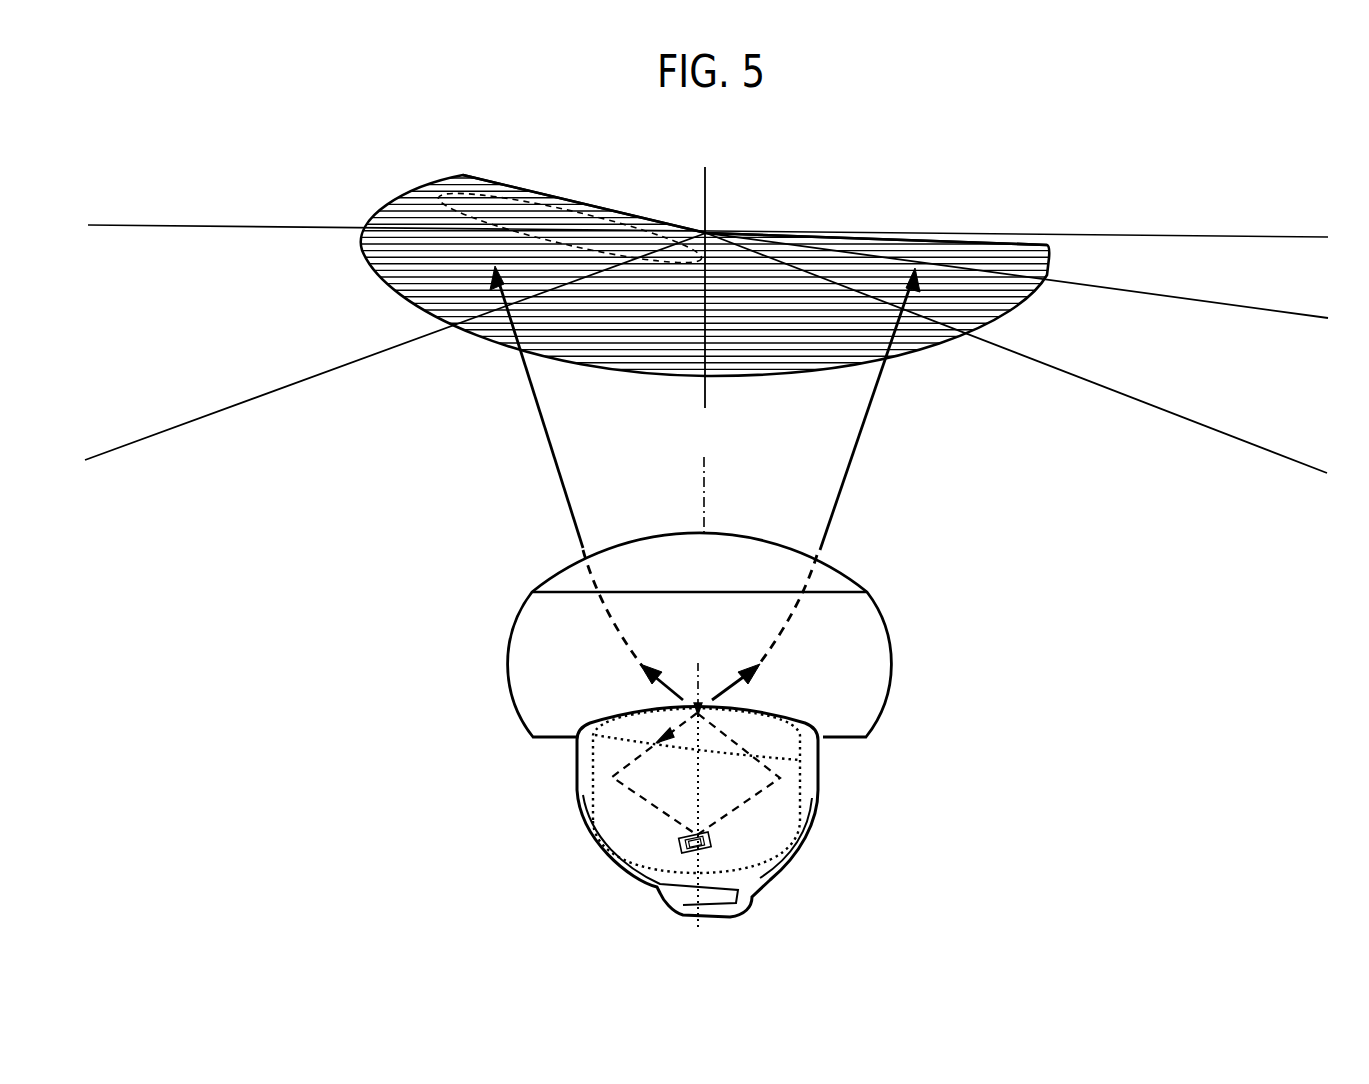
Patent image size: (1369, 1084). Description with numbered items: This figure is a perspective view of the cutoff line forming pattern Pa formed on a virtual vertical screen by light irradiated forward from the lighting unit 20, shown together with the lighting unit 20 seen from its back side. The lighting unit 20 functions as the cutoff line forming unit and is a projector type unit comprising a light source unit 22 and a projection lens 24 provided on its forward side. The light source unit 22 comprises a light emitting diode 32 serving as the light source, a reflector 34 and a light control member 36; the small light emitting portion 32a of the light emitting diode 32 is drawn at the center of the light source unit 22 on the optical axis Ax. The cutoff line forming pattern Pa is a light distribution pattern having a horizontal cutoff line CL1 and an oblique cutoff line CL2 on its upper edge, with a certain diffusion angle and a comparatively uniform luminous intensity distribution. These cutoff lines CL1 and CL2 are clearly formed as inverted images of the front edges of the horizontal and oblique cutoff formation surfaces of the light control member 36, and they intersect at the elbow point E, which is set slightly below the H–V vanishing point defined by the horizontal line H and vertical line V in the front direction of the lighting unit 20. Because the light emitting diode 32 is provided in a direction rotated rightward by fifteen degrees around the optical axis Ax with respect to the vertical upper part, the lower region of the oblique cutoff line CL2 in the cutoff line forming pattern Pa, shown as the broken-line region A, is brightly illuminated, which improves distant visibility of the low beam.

The lighting unit 20 is at (771, 709).
The light source unit 22 is at (577, 715).
The projection lens 24 is at (519, 579).
The light emitting diode 32 is at (725, 834).
The light emitting portion 32a is at (710, 843).
The reflector 34 is at (820, 777).
The light control member 36 is at (780, 750).
The region A is at (453, 201).
The optical axis Ax is at (700, 497).
The horizontal cutoff line CL1 is at (822, 243).
The oblique cutoff line CL2 is at (553, 196).
The elbow point E is at (712, 230).
The horizontal line H is at (708, 235).
The vertical line V is at (705, 294).
The cutoff line forming pattern Pa is at (988, 240).